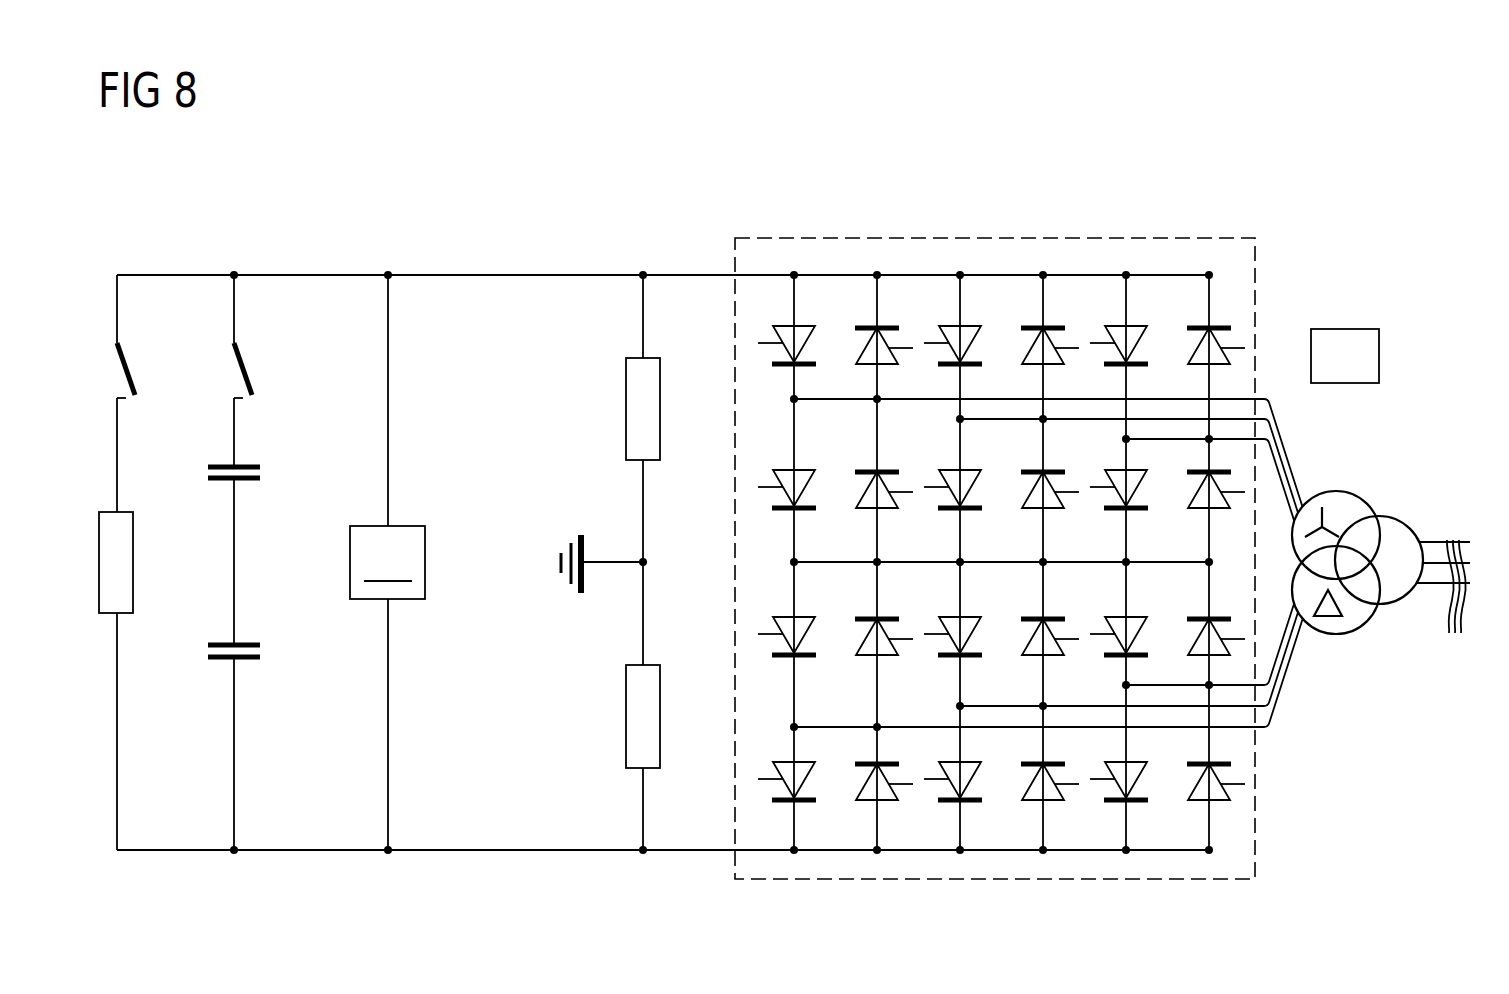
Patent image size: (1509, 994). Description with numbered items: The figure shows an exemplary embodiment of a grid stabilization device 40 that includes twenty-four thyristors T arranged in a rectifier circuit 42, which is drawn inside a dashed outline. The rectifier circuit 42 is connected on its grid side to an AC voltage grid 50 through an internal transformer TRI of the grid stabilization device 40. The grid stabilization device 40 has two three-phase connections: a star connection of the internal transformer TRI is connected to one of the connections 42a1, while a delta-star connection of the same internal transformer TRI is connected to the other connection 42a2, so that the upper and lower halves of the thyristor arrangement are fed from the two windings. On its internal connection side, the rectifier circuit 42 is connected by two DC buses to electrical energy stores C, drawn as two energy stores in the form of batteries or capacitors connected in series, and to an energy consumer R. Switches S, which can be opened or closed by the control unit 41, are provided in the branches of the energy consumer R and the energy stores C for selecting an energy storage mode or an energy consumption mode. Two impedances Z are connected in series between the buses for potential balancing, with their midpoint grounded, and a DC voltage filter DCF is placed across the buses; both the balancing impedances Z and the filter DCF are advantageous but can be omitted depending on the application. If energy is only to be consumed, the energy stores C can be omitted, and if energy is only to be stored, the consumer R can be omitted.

The grid stabilization device 40 is at (148, 240).
The control unit 41 is at (1359, 373).
The rectifier circuit 42 is at (805, 238).
The connection 42a1 is at (1302, 441).
The connection 42a2 is at (1305, 675).
The AC voltage grid 50 is at (1443, 607).
The switch S is at (128, 364).
The electrical energy store C is at (246, 466).
The energy consumer R is at (133, 565).
The DC voltage filter DCF is at (387, 562).
The impedance Z is at (626, 406).
The thyristor T is at (778, 367).
The internal transformer TRI is at (1368, 629).